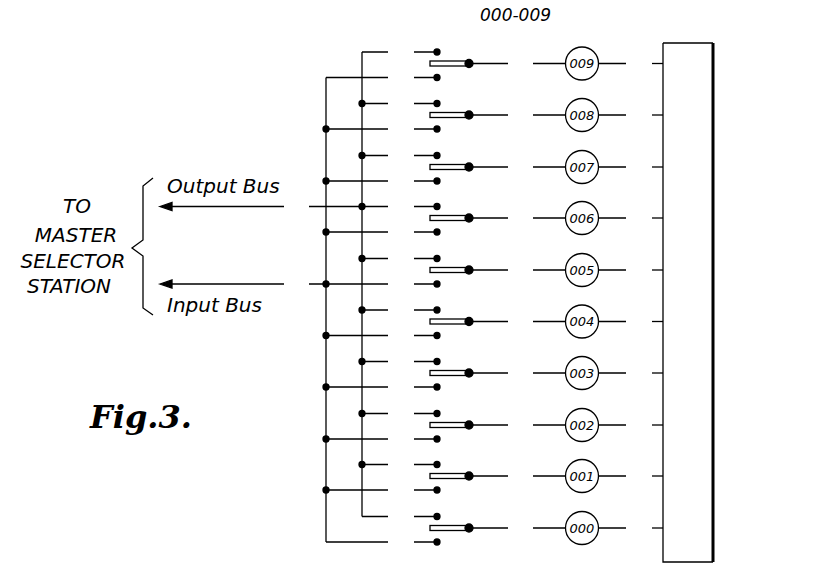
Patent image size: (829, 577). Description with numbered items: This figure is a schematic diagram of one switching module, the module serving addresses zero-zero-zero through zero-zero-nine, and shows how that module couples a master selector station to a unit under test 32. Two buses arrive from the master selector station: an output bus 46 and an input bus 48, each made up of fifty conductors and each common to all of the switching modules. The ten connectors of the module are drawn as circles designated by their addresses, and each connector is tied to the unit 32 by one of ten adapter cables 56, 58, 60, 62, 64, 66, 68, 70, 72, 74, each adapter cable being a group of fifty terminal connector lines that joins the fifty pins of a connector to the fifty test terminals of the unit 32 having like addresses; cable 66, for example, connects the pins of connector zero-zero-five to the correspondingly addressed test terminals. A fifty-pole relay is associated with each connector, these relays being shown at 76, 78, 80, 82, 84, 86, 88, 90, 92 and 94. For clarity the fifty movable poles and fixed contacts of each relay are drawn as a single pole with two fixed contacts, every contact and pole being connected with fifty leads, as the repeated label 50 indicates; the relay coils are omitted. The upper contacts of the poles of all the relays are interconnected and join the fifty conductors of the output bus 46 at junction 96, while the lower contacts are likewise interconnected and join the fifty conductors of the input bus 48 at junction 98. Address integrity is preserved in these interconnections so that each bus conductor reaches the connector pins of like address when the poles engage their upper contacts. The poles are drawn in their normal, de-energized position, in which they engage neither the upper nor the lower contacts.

The unit under test 32 is at (714, 90).
The output bus 46 is at (214, 210).
The input bus 48 is at (202, 283).
The conductor count 50 is at (468, 297).
The adapter cable 56 is at (657, 525).
The adapter cable 58 is at (657, 473).
The adapter cable 60 is at (657, 422).
The adapter cable 62 is at (657, 370).
The adapter cable 64 is at (657, 318).
The adapter cable 66 is at (657, 267).
The adapter cable 68 is at (657, 215).
The adapter cable 70 is at (657, 164).
The adapter cable 72 is at (657, 112).
The adapter cable 74 is at (657, 60).
The relay 76 is at (453, 526).
The relay 78 is at (453, 474).
The relay 80 is at (453, 422).
The relay 82 is at (453, 370).
The relay 84 is at (453, 319).
The relay 86 is at (453, 268).
The relay 88 is at (453, 216).
The relay 90 is at (453, 164).
The relay 92 is at (453, 112).
The relay 94 is at (453, 61).
The junction 96 is at (361, 206).
The junction 98 is at (331, 282).